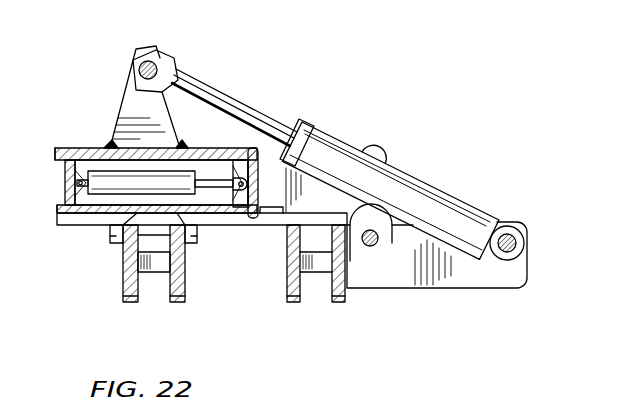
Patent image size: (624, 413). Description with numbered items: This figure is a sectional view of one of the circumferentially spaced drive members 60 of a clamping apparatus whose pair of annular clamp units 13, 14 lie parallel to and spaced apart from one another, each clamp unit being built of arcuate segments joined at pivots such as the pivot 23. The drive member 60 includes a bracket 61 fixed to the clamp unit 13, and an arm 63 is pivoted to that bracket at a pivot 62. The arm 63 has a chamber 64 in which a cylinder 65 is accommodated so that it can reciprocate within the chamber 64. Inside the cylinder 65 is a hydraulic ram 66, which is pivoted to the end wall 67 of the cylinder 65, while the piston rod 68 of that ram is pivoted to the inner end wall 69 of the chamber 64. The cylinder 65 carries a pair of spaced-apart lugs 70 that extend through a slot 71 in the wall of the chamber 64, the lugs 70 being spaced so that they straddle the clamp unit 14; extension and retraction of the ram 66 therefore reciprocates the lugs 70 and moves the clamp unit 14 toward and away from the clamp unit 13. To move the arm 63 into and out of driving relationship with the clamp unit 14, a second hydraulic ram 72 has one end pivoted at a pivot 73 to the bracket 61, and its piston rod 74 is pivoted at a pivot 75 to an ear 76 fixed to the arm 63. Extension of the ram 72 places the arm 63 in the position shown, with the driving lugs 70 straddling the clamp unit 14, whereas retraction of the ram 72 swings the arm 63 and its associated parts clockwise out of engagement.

The annular clamp unit 13 is at (348, 310).
The annular clamp unit 14 is at (200, 282).
The pivot 23 is at (97, 38).
The drive member 60 is at (303, 84).
The bracket 61 is at (482, 276).
The pivot 62 is at (375, 246).
The arm 63 is at (280, 208).
The chamber 64 is at (62, 162).
The cylinder 65 is at (118, 148).
The hydraulic ram 66 is at (158, 185).
The end wall 67 is at (70, 185).
The piston rod 68 is at (211, 180).
The inner end wall 69 is at (263, 190).
The lugs 70 is at (115, 243).
The slot 71 is at (96, 212).
The hydraulic ram 72 is at (426, 194).
The pivot 73 is at (515, 240).
The piston rod 74 is at (218, 102).
The pivot 75 is at (153, 68).
The ear 76 is at (137, 91).